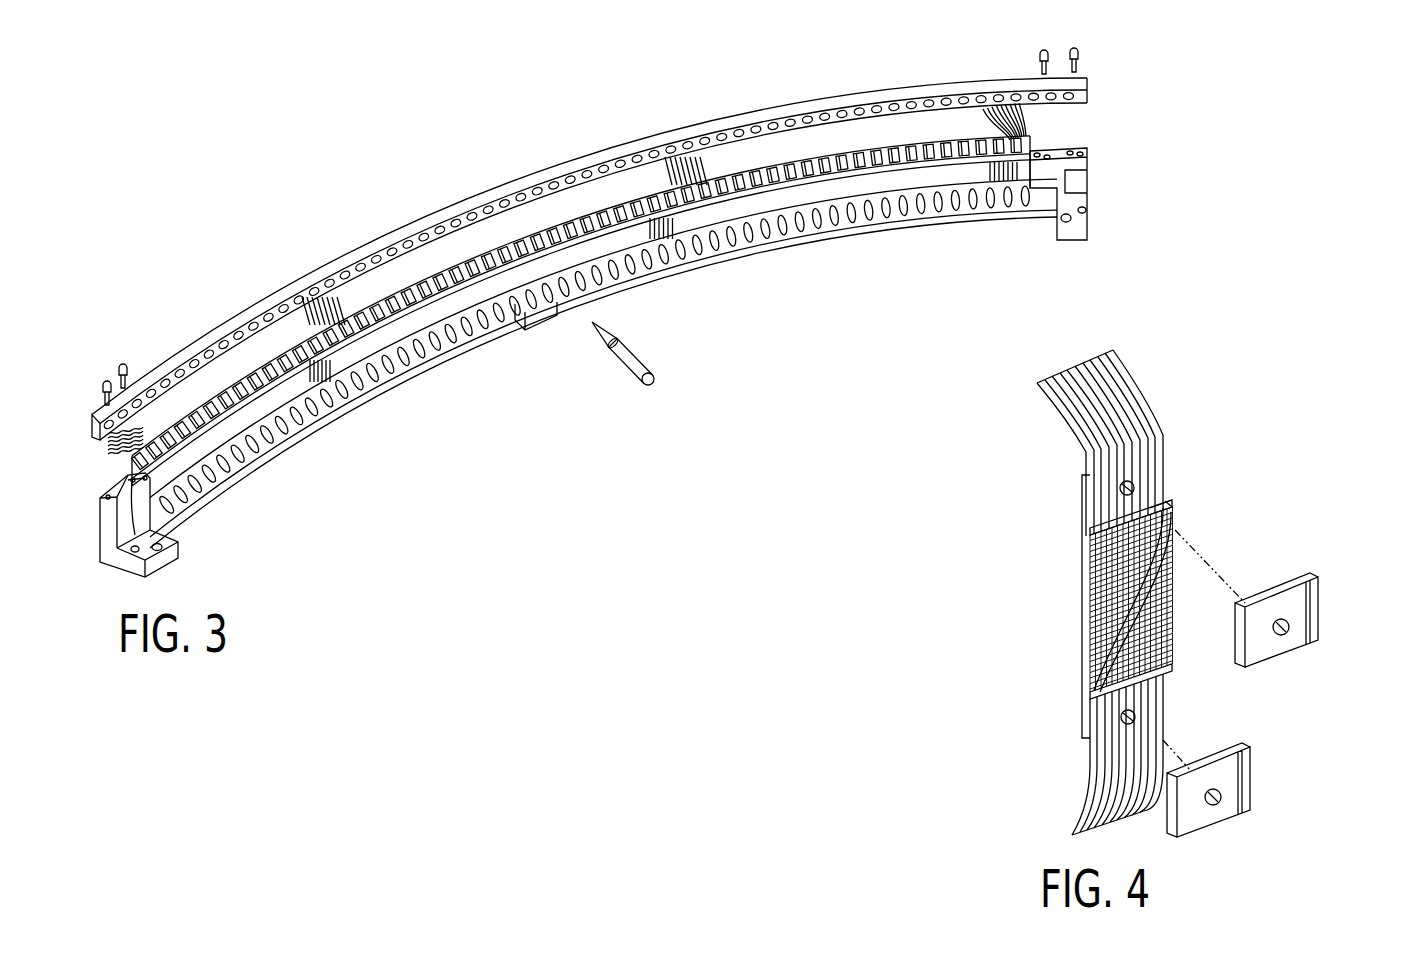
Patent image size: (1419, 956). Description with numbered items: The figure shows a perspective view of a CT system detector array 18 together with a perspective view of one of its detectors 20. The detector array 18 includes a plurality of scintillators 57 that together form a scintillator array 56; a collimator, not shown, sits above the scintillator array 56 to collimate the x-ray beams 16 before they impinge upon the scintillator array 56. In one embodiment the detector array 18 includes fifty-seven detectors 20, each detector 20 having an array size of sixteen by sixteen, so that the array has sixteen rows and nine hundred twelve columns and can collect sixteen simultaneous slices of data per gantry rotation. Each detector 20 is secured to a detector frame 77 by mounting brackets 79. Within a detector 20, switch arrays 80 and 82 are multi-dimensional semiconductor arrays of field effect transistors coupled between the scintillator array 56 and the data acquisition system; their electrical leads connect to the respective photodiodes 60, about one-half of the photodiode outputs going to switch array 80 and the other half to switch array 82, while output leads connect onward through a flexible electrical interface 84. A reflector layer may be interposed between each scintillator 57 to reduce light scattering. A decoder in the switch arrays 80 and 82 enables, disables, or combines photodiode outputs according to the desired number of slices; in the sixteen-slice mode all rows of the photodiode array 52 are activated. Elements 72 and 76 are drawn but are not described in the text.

In FIG. 3, the x-ray beams 16 is at (633, 369).
In FIG. 3, the detector array 18 is at (467, 186).
In FIG. 3, the detector 20 is at (307, 300).
In FIG. 4, the detector 20 is at (1257, 417).
In FIG. 3, the photodiode array 52 is at (1034, 153).
In FIG. 4, the photodiode array 52 is at (1084, 681).
In FIG. 3, the scintillator array 56 is at (910, 178).
In FIG. 4, the scintillator array 56 is at (1175, 583).
In FIG. 4, the scintillator 57 is at (1168, 650).
In FIG. 4, the photodiode 60 is at (1100, 603).
In FIG. 4, the upper clamp edge 72 is at (1172, 510).
In FIG. 4, the upper clamp bar 76 is at (1163, 506).
In FIG. 3, the detector frame 77 is at (128, 464).
In FIG. 4, the mounting bracket 79 is at (1298, 592).
In FIG. 4, the switch array 80 is at (1088, 530).
In FIG. 4, the switch array 82 is at (1160, 673).
In FIG. 4, the flexible electrical interface 84 is at (1147, 437).